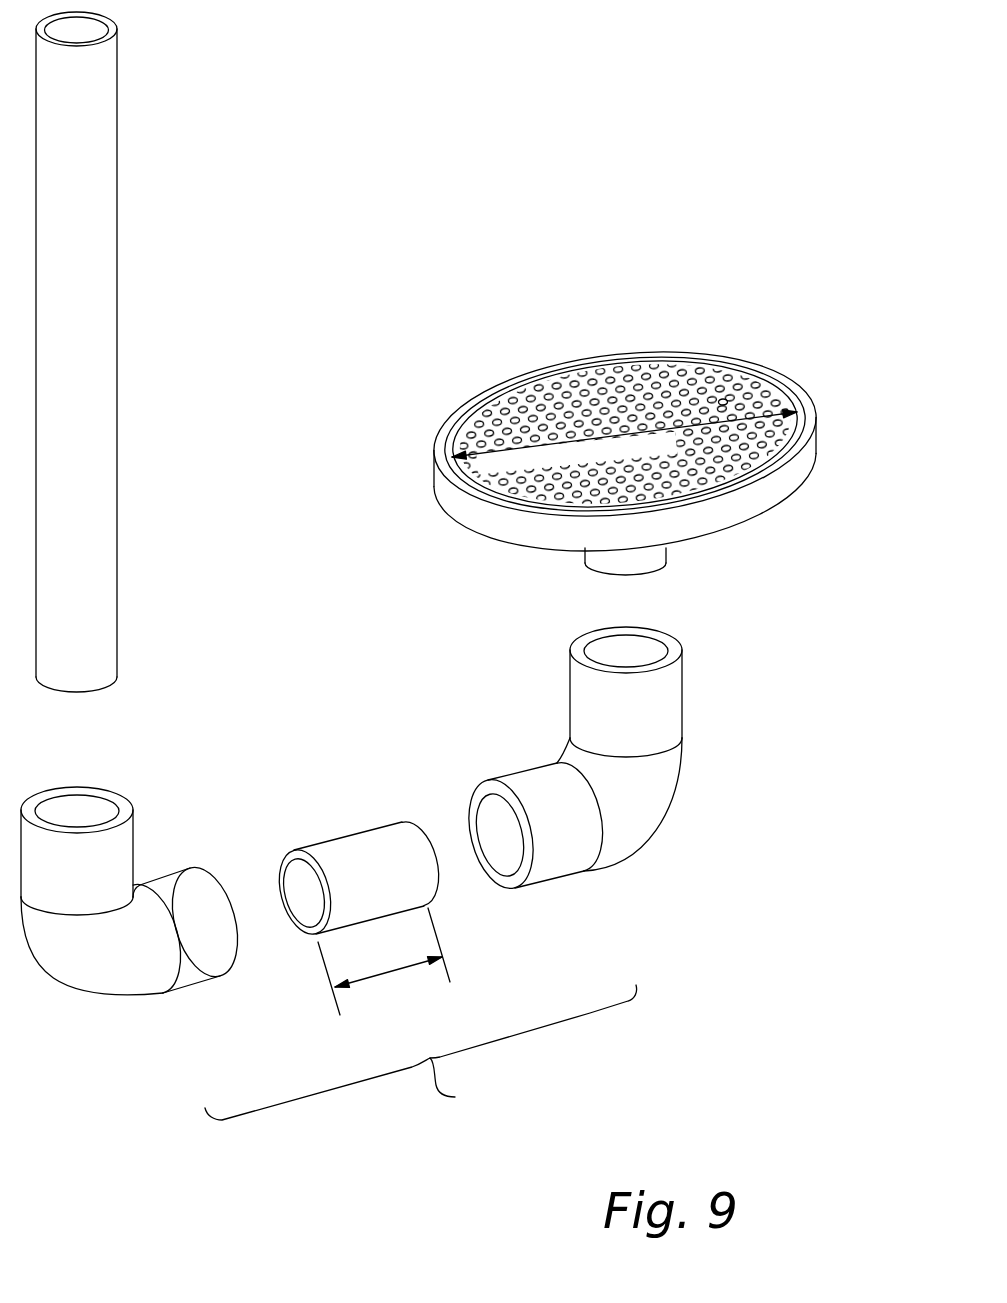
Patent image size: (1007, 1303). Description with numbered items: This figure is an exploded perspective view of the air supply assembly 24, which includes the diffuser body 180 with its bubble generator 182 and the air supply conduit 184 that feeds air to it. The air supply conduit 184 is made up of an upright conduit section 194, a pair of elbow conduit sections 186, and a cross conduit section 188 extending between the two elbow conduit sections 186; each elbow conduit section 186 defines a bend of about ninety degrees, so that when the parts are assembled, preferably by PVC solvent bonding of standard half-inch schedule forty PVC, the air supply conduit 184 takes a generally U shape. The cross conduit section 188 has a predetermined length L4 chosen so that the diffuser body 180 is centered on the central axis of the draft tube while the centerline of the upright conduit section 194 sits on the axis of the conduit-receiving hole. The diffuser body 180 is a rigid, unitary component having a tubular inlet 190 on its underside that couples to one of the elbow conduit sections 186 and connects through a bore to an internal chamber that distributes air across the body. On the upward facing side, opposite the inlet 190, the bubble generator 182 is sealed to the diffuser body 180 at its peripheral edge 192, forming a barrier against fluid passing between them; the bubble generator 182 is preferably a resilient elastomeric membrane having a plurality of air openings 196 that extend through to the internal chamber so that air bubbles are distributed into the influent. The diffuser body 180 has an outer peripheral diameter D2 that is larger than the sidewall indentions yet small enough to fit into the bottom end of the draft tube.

The air supply assembly 24 is at (595, 45).
The upright conduit section 194 is at (107, 192).
The diffuser body 180 is at (645, 419).
The bubble generator 182 is at (614, 396).
The peripheral edge 192 is at (522, 385).
The air openings 196 is at (726, 400).
The inlet 190 is at (651, 558).
The elbow conduit sections 186 is at (677, 702).
The cross conduit section 188 is at (370, 837).
The air supply conduit 184 is at (455, 1097).
The outer peripheral diameter D2 is at (490, 451).
The predetermined length L4 is at (390, 970).